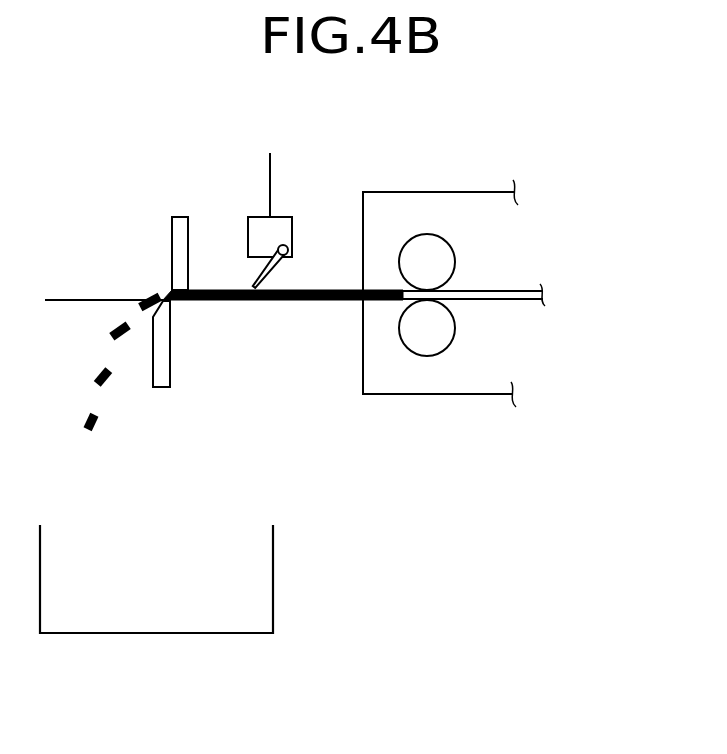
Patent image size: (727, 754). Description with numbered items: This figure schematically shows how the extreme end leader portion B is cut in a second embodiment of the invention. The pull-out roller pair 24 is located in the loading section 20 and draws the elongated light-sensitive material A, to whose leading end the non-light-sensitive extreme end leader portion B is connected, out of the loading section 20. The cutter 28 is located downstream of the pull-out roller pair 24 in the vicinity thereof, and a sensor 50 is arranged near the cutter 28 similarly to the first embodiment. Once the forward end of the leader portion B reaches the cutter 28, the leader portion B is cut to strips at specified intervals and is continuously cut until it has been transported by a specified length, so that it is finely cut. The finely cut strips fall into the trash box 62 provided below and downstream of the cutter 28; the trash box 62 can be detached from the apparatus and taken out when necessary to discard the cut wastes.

The cutter 28 is at (183, 218).
The sensor 50 is at (262, 230).
The pull-out roller pair 24 is at (424, 257).
The loading section 20 is at (452, 375).
The trash box 62 is at (120, 633).
The light-sensitive material A is at (488, 300).
The extreme end leader portion B is at (307, 302).